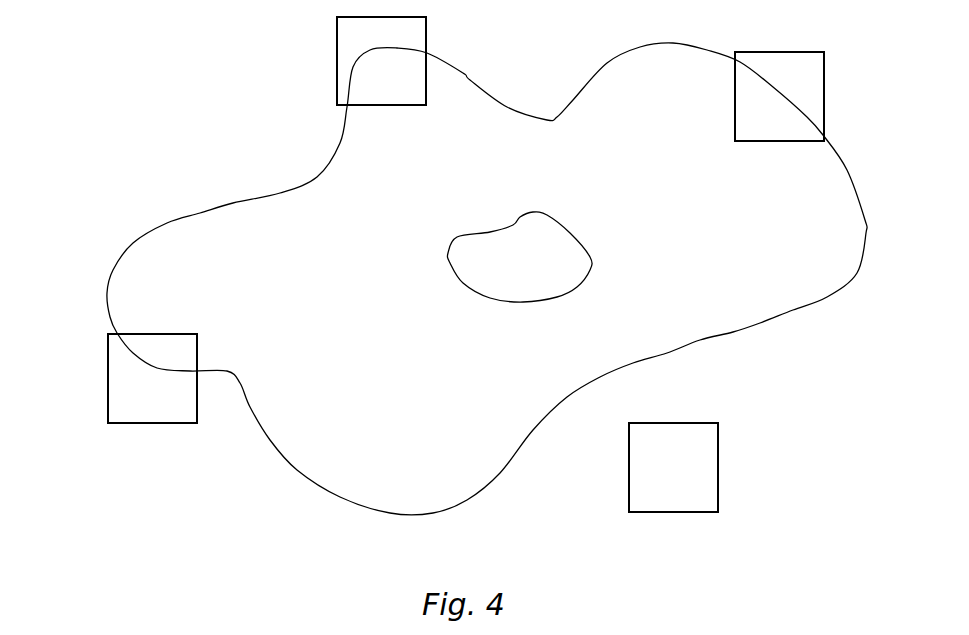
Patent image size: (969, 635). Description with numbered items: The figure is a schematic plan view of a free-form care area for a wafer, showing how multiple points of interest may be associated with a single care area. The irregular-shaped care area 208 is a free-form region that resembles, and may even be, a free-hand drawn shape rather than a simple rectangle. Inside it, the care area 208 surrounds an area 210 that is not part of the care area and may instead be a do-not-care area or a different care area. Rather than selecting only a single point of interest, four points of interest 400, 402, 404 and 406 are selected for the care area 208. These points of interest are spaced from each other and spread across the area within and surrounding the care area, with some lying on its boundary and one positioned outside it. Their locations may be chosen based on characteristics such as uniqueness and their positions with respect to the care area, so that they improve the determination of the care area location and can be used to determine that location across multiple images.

The irregular-shaped care area 208 is at (163, 222).
The area surrounded by care area 210 is at (567, 293).
The point of interest 400 is at (336, 52).
The point of interest 402 is at (824, 87).
The point of interest 404 is at (629, 457).
The point of interest 406 is at (108, 388).